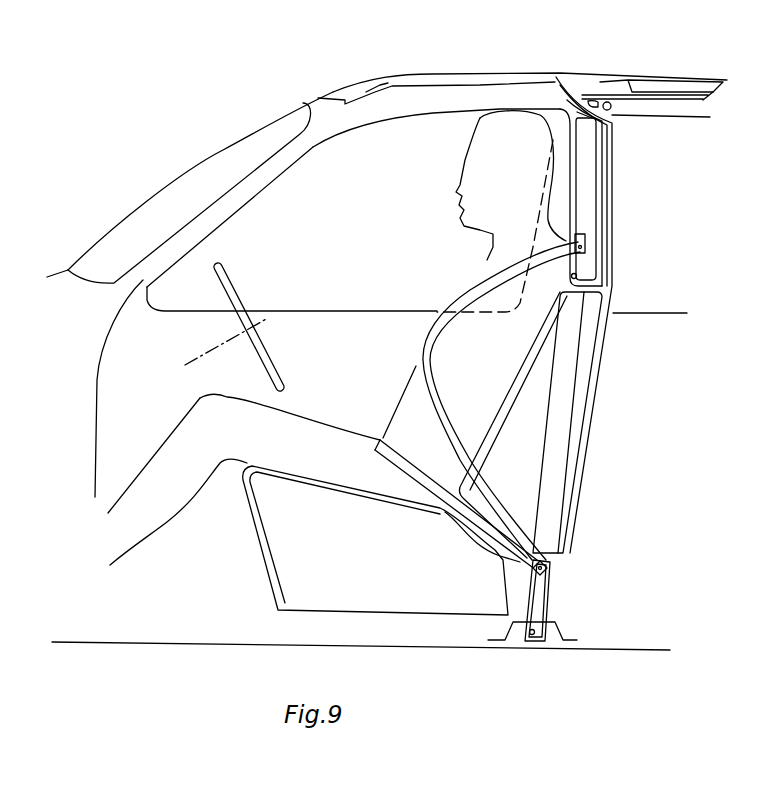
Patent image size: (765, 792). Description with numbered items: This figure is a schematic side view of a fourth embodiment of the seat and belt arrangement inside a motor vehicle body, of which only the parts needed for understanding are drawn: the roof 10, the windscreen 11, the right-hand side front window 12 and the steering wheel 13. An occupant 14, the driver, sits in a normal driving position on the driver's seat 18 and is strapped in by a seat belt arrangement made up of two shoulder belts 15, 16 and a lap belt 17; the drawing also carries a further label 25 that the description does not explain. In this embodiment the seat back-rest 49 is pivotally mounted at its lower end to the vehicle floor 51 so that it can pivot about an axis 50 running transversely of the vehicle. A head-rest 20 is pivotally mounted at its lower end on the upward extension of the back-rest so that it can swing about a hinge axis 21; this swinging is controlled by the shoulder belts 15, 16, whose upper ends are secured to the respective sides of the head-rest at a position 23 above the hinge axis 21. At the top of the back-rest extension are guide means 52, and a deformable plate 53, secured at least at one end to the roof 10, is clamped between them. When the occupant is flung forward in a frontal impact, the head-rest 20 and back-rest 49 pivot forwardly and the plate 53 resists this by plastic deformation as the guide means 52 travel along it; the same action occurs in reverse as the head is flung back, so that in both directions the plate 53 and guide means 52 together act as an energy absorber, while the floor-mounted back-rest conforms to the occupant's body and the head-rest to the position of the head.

The roof 10 is at (393, 77).
The windscreen 11 is at (180, 187).
The right-hand side front window 12 is at (305, 188).
The steering wheel 13 is at (230, 285).
The occupant 14 is at (323, 442).
The shoulder belt 15 is at (505, 270).
The shoulder belt 16 is at (444, 405).
The lap belt 17 is at (418, 485).
The driver's seat 18 is at (288, 565).
The head-rest 20 is at (563, 105).
The hinge axis 21 is at (577, 277).
The belt connexion position 23 is at (585, 244).
The occupant 25 is at (487, 143).
The seat back-rest 49 is at (594, 414).
The axis 50 is at (545, 628).
The vehicle floor 51 is at (616, 648).
The guide means 52 is at (614, 110).
The deformable plate 53 is at (497, 84).